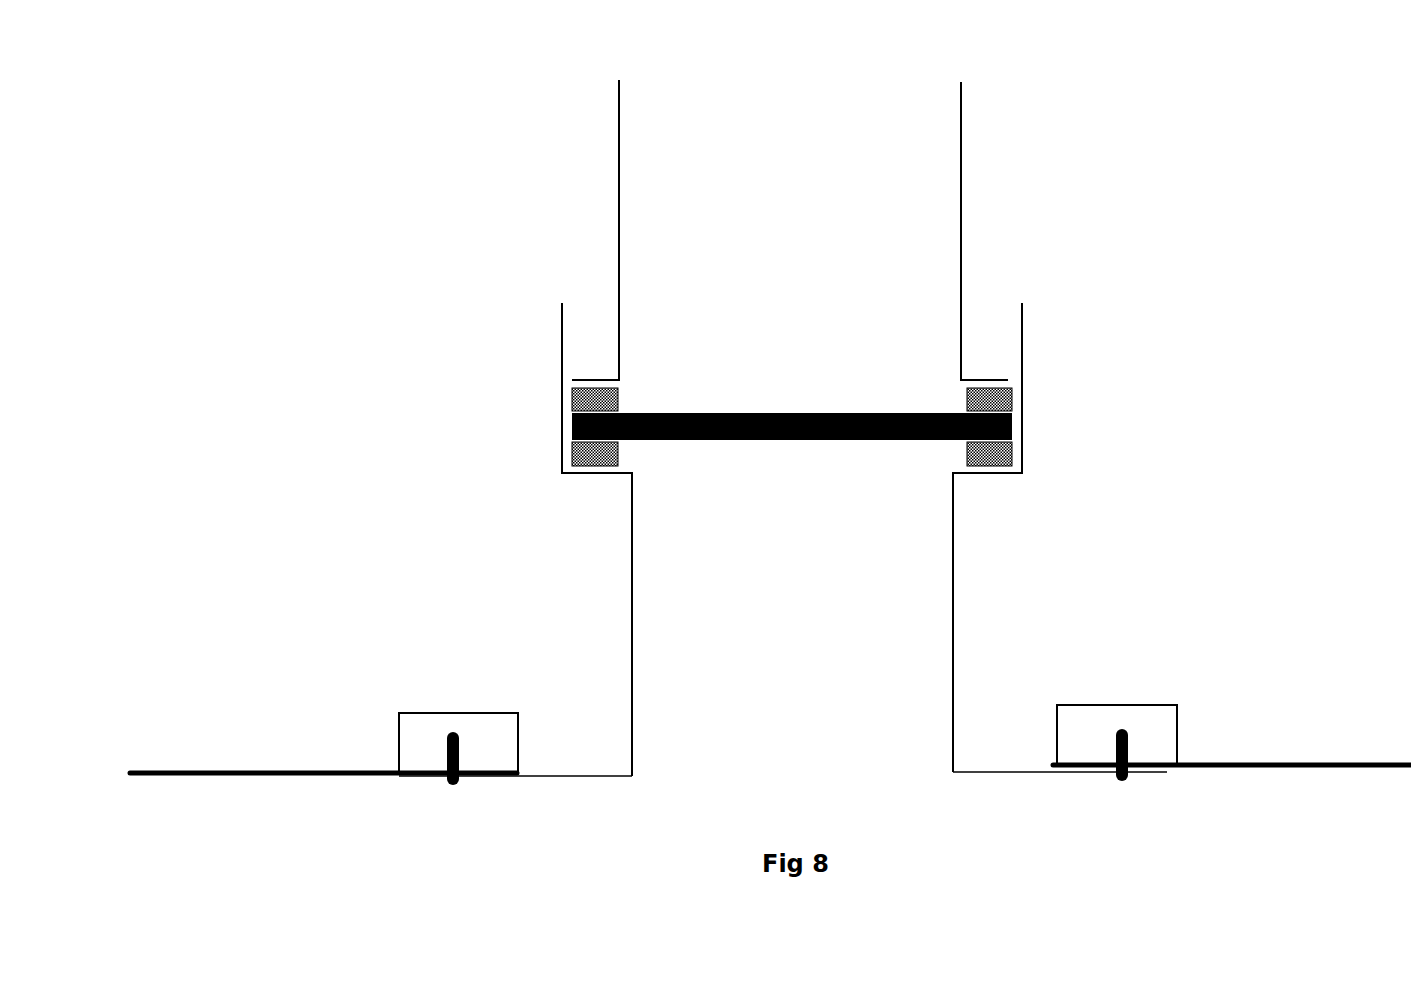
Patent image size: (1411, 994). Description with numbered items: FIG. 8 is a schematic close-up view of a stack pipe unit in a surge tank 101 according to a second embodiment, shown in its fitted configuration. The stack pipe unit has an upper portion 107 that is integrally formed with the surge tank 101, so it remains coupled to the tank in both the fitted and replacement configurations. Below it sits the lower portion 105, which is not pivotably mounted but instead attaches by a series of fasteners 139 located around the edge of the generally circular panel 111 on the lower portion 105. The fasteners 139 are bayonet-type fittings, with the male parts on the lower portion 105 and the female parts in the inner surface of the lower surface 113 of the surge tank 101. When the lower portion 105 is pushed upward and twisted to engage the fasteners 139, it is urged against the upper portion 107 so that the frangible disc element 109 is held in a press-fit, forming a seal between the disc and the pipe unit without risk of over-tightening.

The surge tank 101 is at (258, 493).
The lower portion 105 is at (616, 642).
The upper portion 107 is at (608, 127).
The frangible disc element 109 is at (1004, 378).
The panel 111 is at (566, 776).
The lower surface 113 is at (303, 784).
The fasteners 139 is at (398, 720).